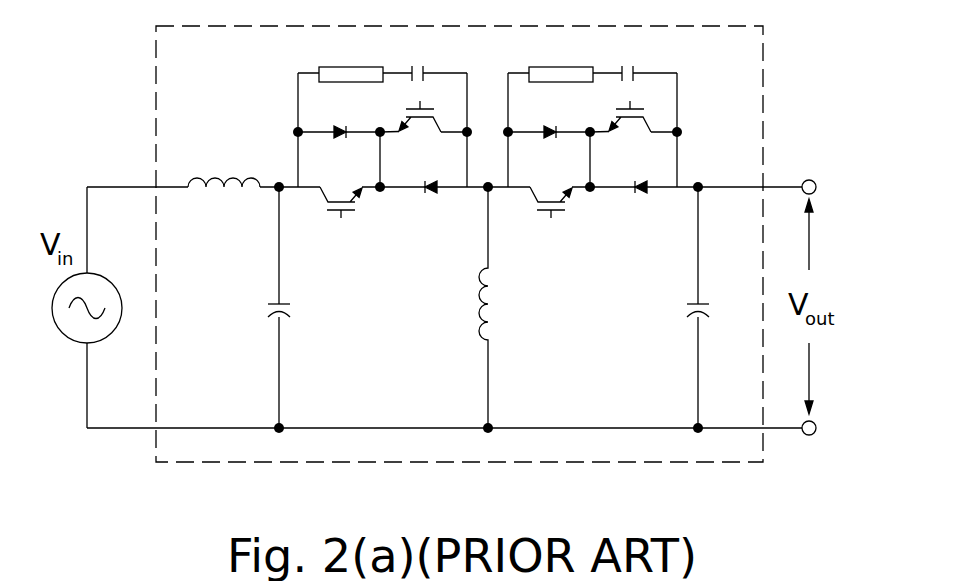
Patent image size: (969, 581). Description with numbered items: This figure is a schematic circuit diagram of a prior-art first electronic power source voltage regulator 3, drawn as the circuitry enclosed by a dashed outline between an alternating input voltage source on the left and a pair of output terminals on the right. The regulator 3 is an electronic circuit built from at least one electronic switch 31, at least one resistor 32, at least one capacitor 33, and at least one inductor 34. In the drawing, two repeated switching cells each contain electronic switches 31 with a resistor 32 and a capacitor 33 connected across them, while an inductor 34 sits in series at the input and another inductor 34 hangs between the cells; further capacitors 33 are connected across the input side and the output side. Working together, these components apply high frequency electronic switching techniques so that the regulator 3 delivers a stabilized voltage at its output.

The first electronic power source voltage regulator 3 is at (740, 130).
The electronic switch 31 is at (446, 222).
The resistor 32 is at (487, 113).
The capacitor 33 is at (509, 230).
The inductor 34 is at (359, 286).